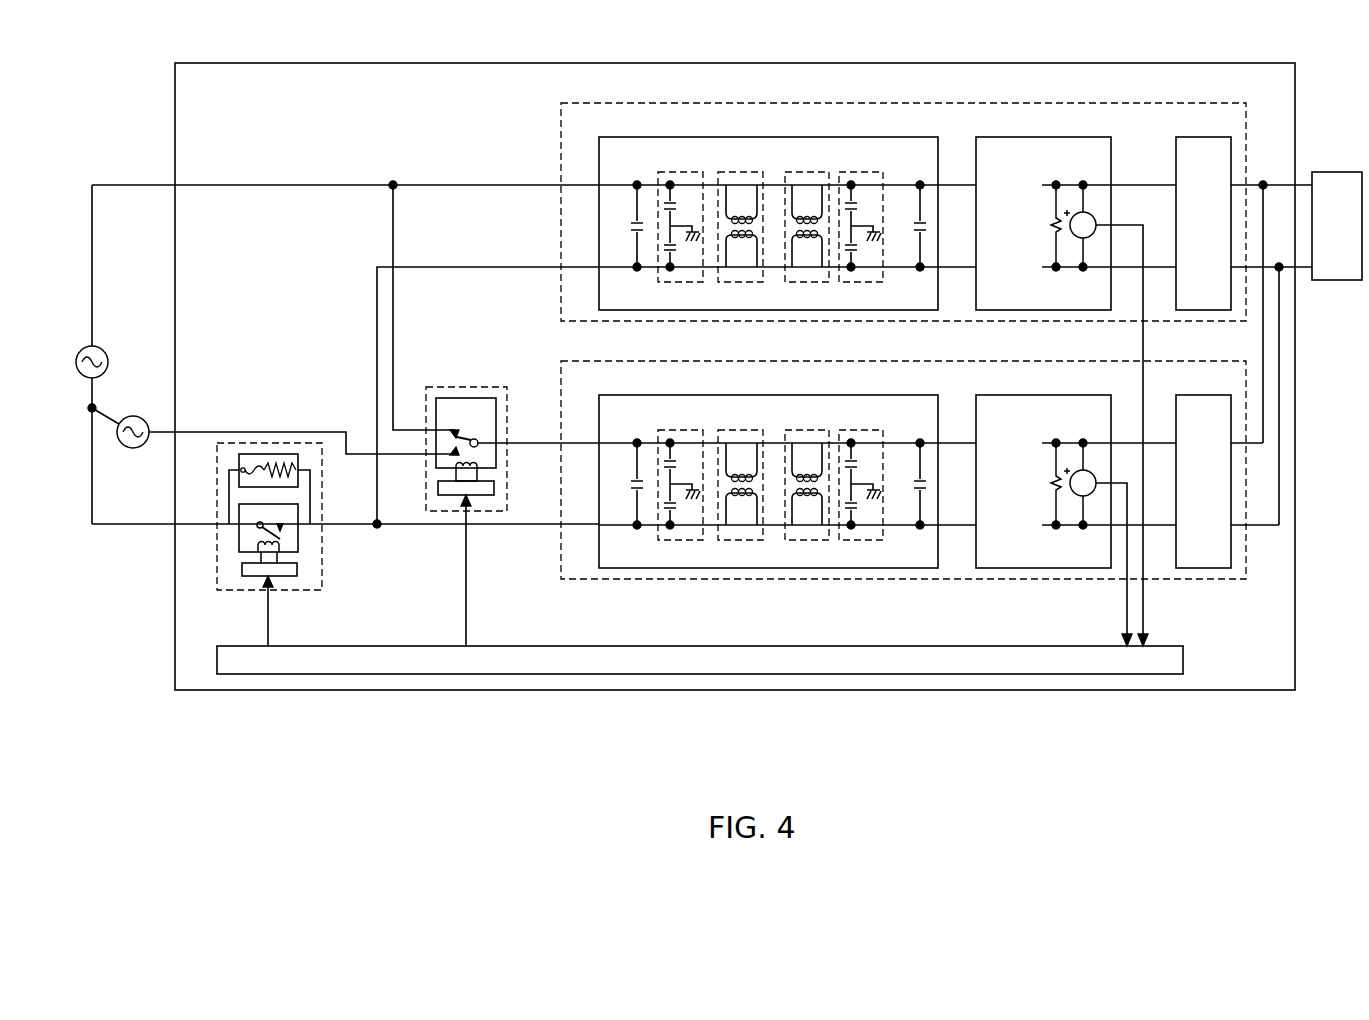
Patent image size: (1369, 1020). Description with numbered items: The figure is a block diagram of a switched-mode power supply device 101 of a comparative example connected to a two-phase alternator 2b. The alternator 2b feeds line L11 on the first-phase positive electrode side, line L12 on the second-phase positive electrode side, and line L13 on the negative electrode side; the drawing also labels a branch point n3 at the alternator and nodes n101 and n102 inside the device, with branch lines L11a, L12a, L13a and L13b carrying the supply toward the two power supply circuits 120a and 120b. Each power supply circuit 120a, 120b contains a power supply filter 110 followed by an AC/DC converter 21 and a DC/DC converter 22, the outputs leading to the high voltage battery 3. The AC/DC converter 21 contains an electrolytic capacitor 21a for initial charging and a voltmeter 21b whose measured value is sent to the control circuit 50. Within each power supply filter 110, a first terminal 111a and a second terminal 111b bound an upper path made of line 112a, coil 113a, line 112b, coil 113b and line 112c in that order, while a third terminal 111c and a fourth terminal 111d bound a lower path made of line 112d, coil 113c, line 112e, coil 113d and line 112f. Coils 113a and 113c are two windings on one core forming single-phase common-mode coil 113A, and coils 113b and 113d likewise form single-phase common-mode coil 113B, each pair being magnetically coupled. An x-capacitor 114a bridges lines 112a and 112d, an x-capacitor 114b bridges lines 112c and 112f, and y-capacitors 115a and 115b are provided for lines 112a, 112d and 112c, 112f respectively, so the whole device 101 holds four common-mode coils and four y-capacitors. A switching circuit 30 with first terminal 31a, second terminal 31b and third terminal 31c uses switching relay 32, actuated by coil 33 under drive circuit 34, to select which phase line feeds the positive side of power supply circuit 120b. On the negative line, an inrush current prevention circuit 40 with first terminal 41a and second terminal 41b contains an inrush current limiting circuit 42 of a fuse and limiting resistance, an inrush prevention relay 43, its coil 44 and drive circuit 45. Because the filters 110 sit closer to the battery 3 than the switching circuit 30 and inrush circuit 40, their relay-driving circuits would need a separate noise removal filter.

The switched-mode power supply device 101 is at (724, 63).
The power supply circuit 120a is at (918, 103).
The power supply circuit 120b is at (918, 361).
The power supply filter 110 is at (788, 137).
The first terminal 111a is at (599, 185).
The second terminal 111b is at (942, 184).
The third terminal 111c is at (599, 267).
The fourth terminal 111d is at (942, 266).
The line 112a is at (667, 183).
The line 112b is at (768, 184).
The line 112c is at (903, 184).
The line 112d is at (645, 270).
The line 112e is at (768, 270).
The line 112f is at (902, 270).
The single-phase common-mode coil 113A is at (733, 173).
The single-phase common-mode coil 113B is at (815, 173).
The coil 113a is at (737, 214).
The coil 113b is at (804, 214).
The coil 113c is at (741, 244).
The coil 113d is at (808, 244).
The x-capacitor 114a is at (634, 222).
The x-capacitor 114b is at (918, 224).
The y-capacitor 115a is at (690, 172).
The y-capacitor 115b is at (867, 173).
The AC/DC converter 21 is at (1046, 137).
The electrolytic capacitor 21a is at (1052, 236).
The voltmeter 21b is at (1080, 212).
The DC/DC converter 22 is at (1203, 137).
The high voltage battery 3 is at (1336, 172).
The control circuit 50 is at (1183, 660).
The two-phase alternator 2b is at (139, 356).
The node n3 is at (90, 407).
The node n101 is at (394, 189).
The node n102 is at (378, 529).
The line L11 is at (147, 185).
The branch power line L11a is at (393, 232).
The line L12 is at (168, 433).
The branch power line L12a is at (540, 428).
The line L13 is at (147, 525).
The branch power line L13a is at (377, 338).
The branch power line L13b is at (500, 527).
The switching circuit 30 is at (450, 387).
The first terminal 31a is at (450, 432).
The second terminal 31b is at (450, 455).
The third terminal 31c is at (507, 437).
The switching relay 32 is at (474, 439).
The coil 33 is at (480, 468).
The drive circuit 34 is at (494, 487).
The inrush current prevention circuit 40 is at (270, 590).
The first terminal 41a is at (218, 523).
The second terminal 41b is at (320, 523).
The inrush current limiting circuit 42 is at (239, 460).
The inrush prevention relay 43 is at (258, 548).
The coil 44 is at (298, 552).
The drive circuit 45 is at (262, 578).